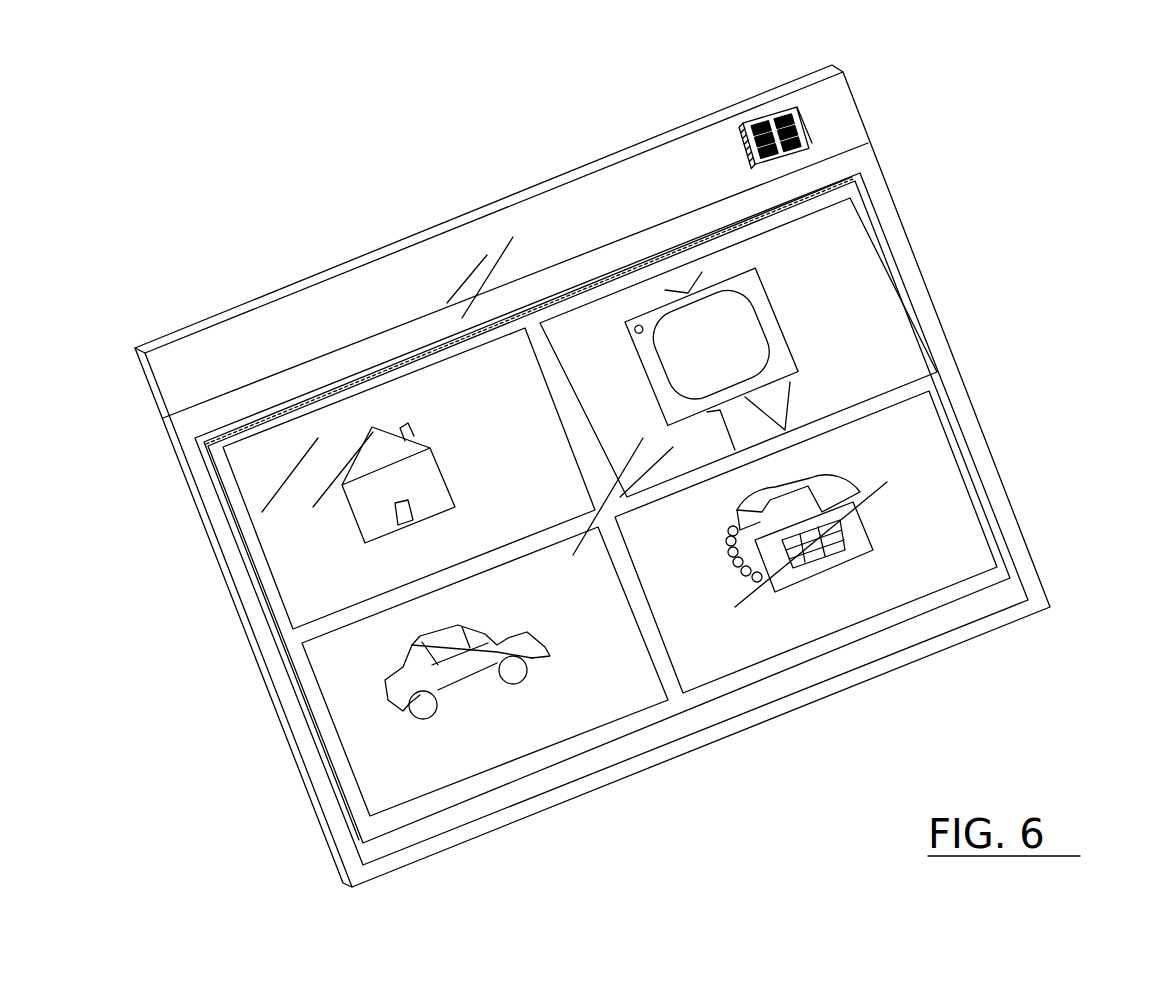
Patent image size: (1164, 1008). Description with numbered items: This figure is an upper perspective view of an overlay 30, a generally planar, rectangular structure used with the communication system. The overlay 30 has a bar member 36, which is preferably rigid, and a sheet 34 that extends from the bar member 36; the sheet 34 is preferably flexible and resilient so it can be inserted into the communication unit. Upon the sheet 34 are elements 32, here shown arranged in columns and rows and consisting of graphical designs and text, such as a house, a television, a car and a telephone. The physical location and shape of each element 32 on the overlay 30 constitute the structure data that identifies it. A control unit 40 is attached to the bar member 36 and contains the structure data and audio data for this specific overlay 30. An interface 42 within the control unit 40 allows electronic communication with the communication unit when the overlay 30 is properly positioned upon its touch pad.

The overlay 30 is at (905, 216).
The elements 32 is at (744, 347).
The sheet 34 is at (1000, 485).
The bar member 36 is at (312, 313).
The control unit 40 is at (758, 119).
The interface 42 is at (793, 102).